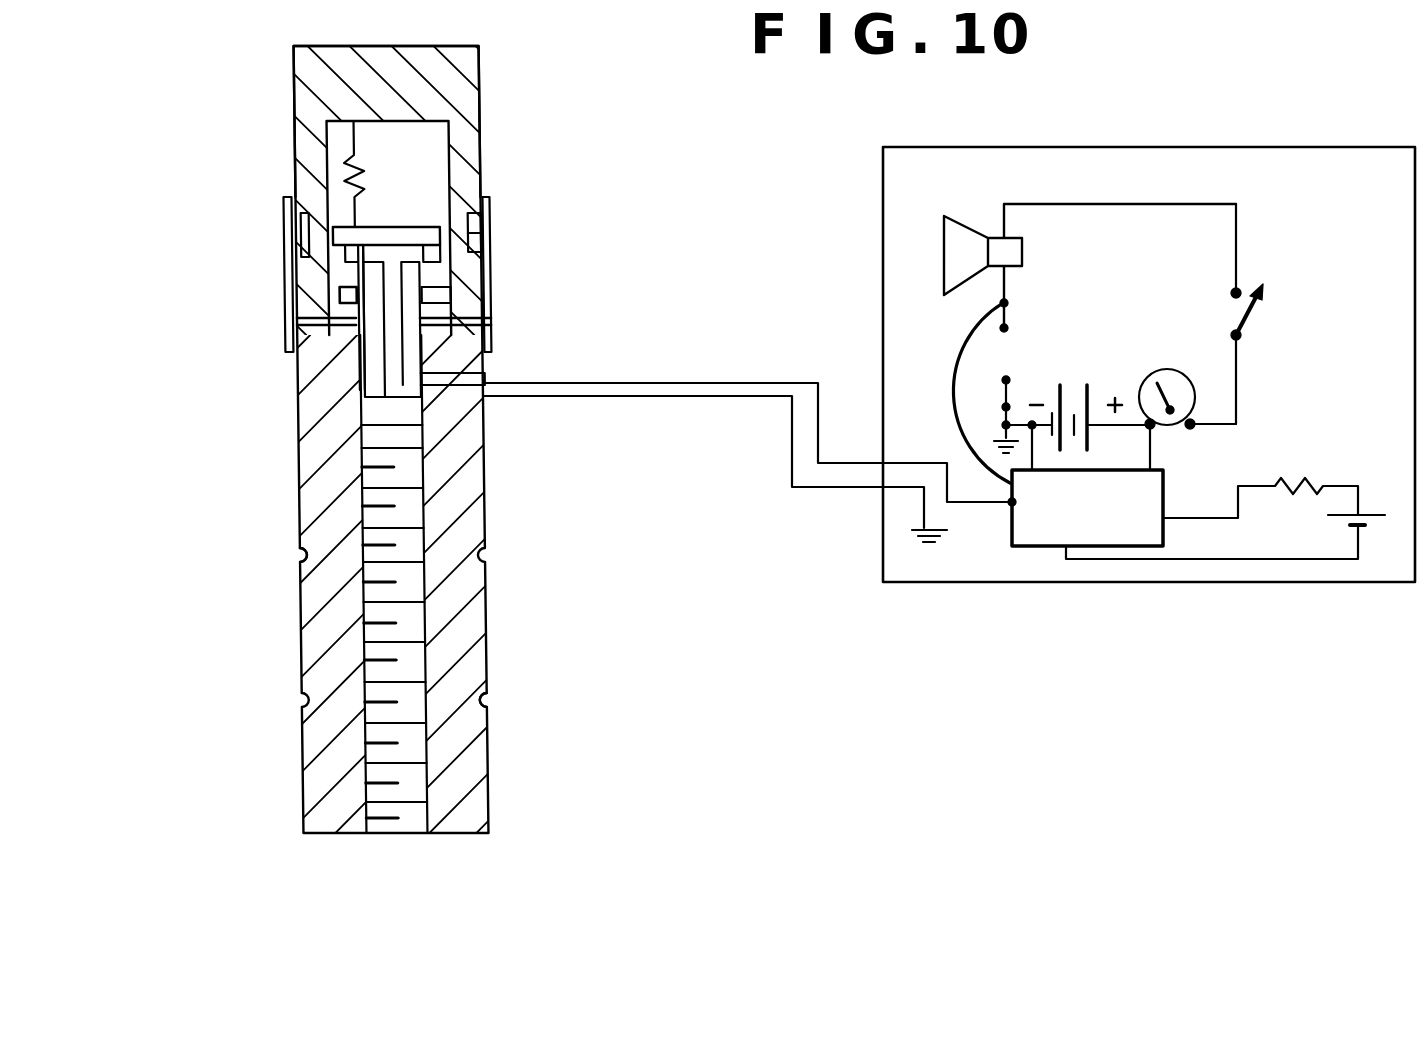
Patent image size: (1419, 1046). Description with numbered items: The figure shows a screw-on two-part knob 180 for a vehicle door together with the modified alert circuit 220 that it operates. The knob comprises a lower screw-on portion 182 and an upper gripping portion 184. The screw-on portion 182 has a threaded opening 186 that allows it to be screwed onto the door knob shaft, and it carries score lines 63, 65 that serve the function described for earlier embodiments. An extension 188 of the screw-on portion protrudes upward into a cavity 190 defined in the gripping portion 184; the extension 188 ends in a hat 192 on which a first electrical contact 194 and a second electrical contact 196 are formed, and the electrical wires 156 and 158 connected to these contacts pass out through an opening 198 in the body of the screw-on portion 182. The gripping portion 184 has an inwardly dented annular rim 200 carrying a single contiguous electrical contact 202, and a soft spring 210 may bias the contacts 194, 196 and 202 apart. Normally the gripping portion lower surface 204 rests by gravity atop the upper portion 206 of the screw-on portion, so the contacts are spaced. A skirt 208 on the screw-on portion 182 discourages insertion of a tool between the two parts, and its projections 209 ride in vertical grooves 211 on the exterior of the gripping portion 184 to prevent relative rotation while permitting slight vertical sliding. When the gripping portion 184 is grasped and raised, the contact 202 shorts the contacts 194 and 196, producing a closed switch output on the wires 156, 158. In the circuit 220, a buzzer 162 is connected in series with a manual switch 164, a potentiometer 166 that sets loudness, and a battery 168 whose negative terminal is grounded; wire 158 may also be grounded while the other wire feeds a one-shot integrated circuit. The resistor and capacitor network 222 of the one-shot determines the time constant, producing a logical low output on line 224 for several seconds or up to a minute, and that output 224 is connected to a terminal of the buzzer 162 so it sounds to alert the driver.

The score line 63 is at (490, 700).
The score line 65 is at (298, 555).
The electrical wire 156 is at (818, 420).
The electrical wire 158 is at (807, 490).
The buzzer 162 is at (944, 244).
The manual switch 164 is at (1248, 318).
The potentiometer 166 is at (1200, 392).
The battery 168 is at (1072, 384).
The screw-on two-part knob 180 is at (512, 187).
The screw-on portion 182 is at (457, 600).
The gripping portion 184 is at (300, 100).
The threaded opening 186 is at (398, 795).
The extension 188 is at (470, 248).
The cavity 190 is at (410, 140).
The hat 192 is at (298, 190).
The first electrical contact 194 is at (330, 262).
The second electrical contact 196 is at (440, 258).
The opening 198 is at (450, 415).
The inwardly dented annular rim 200 is at (446, 308).
The single contiguous electrical contact 202 is at (322, 300).
The gripping portion lower surface 204 is at (483, 335).
The upper portion 206 is at (447, 312).
The skirt 208 is at (298, 238).
The projections 209 is at (490, 232).
The soft spring 210 is at (348, 170).
The vertical grooves 211 is at (470, 205).
The modified circuit 220 is at (1207, 180).
The resistor and capacitor network 222 is at (1311, 538).
The logical low output line 224 is at (956, 358).